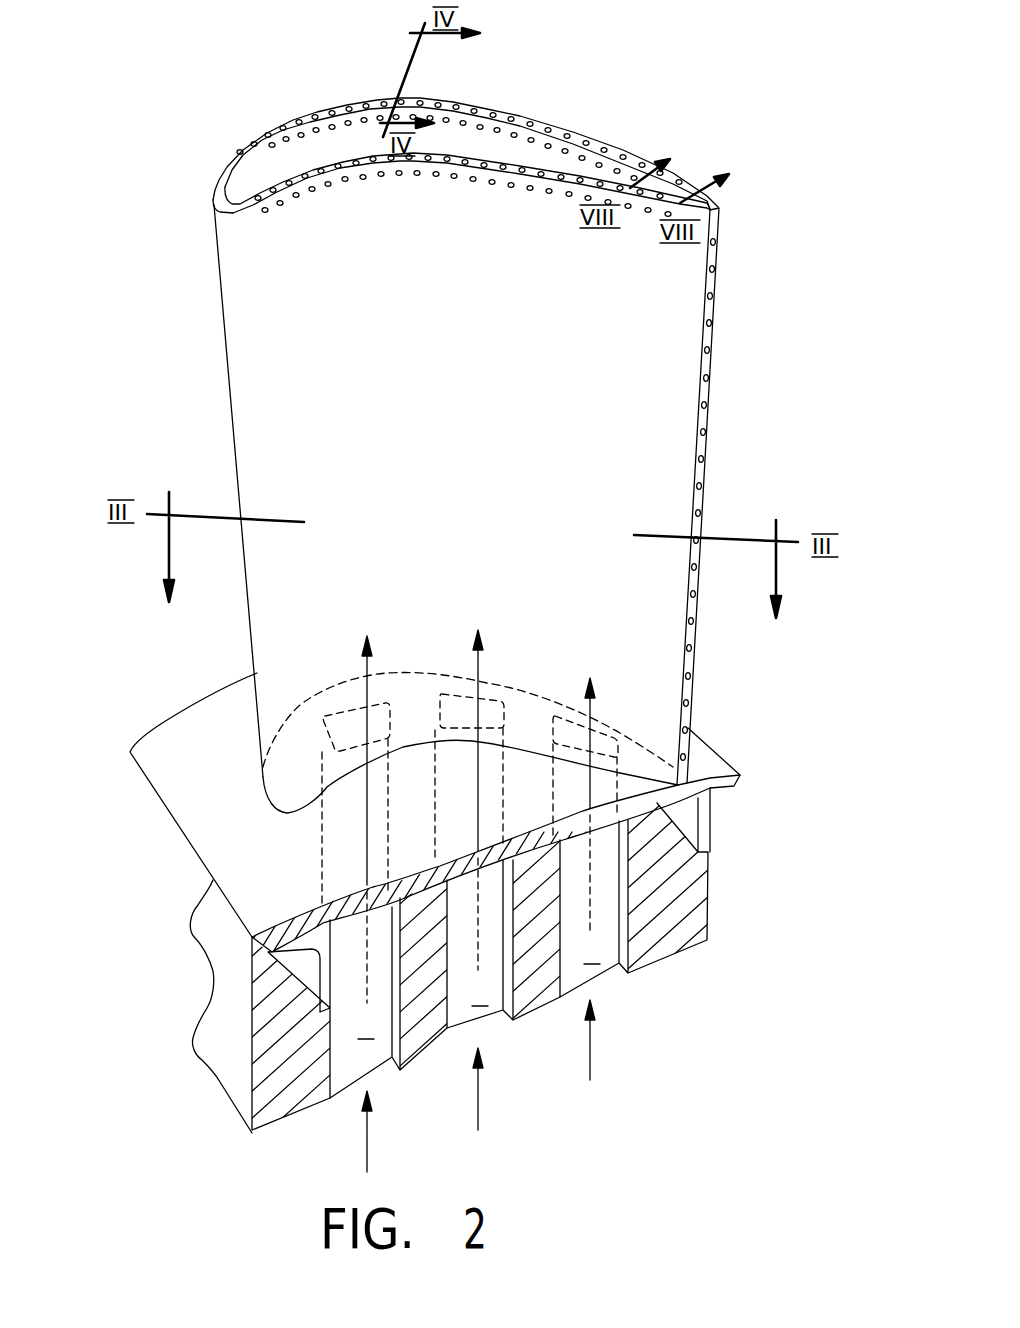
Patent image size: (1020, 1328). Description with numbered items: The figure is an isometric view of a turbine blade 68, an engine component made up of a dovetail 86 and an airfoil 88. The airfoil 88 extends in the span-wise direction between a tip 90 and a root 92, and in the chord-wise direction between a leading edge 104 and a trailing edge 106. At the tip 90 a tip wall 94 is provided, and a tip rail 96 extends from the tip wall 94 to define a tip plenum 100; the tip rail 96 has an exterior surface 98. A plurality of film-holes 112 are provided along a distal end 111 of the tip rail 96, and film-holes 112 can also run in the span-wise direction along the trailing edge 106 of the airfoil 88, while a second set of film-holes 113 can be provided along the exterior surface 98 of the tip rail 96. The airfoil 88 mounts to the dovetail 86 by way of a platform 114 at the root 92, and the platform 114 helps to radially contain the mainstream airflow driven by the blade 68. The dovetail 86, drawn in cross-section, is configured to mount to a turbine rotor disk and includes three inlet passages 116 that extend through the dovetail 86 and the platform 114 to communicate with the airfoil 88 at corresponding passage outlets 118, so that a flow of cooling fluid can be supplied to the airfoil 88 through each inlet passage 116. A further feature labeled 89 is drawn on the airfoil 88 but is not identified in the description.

The turbine blade 68 is at (70, 154).
The dovetail 86 is at (231, 997).
The airfoil 88 is at (212, 401).
The outer wall 89 is at (257, 308).
The tip 90 is at (724, 194).
The root 92 is at (640, 766).
The tip wall 94 is at (507, 153).
The tip rail 96 is at (380, 100).
The exterior surface 98 is at (256, 158).
The tip plenum 100 is at (557, 152).
The leading edge 104 is at (222, 261).
The trailing edge 106 is at (708, 390).
The distal end 111 is at (623, 157).
The film-holes 112 is at (312, 112).
The second set of film-holes 113 is at (500, 134).
The platform 114 is at (177, 723).
The inlet passage 116 is at (367, 1150).
The passage outlets 118 is at (340, 710).